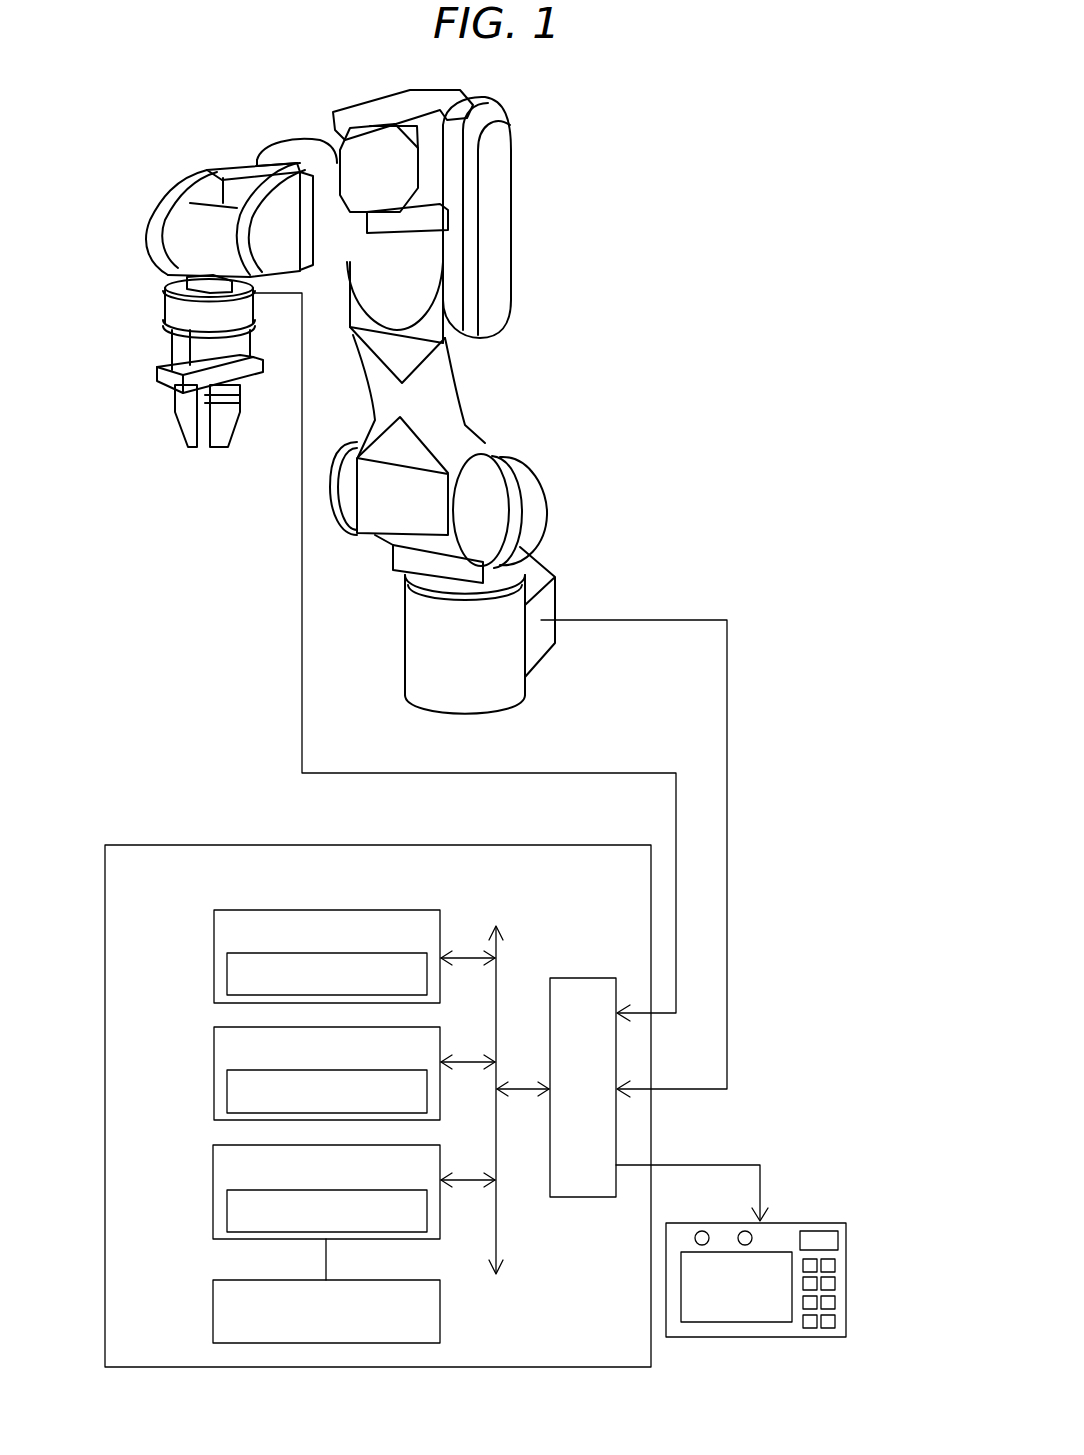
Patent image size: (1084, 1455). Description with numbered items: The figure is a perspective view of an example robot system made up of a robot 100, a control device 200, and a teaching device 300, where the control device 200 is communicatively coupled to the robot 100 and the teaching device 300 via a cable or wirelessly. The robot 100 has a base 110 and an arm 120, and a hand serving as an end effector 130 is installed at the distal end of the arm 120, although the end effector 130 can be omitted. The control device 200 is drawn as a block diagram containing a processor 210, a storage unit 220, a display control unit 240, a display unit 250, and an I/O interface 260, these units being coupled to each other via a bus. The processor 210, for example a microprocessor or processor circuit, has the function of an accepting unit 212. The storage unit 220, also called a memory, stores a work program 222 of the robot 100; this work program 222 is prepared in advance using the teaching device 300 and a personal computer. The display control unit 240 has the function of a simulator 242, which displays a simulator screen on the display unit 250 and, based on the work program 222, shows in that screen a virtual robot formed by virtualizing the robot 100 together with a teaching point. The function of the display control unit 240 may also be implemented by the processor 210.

The robot 100 is at (686, 130).
The base 110 is at (495, 672).
The arm 120 is at (542, 230).
The end effector 130 is at (230, 350).
The control device 200 is at (555, 845).
The processor 210 is at (214, 936).
The accepting unit 212 is at (227, 975).
The storage unit 220 is at (214, 1056).
The work program 222 is at (227, 1092).
The display control unit 240 is at (213, 1174).
The simulator 242 is at (227, 1212).
The display unit 250 is at (213, 1314).
The I/O interface 260 is at (582, 977).
The teaching device 300 is at (820, 1223).